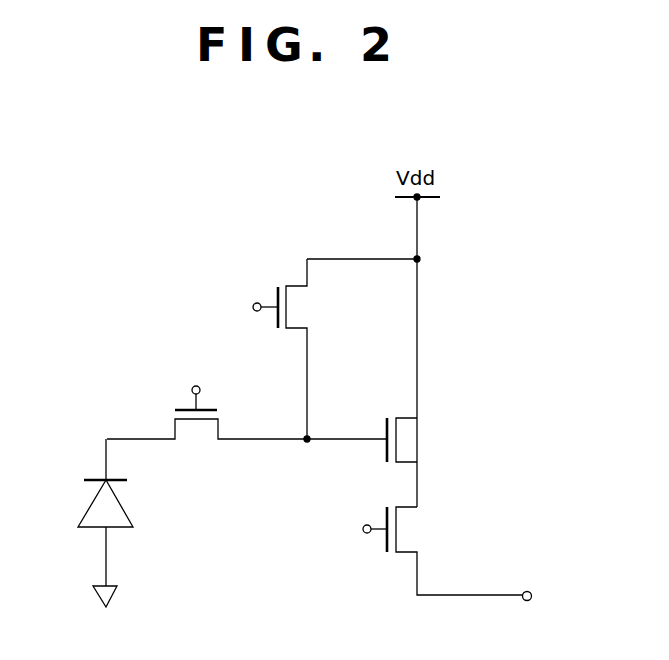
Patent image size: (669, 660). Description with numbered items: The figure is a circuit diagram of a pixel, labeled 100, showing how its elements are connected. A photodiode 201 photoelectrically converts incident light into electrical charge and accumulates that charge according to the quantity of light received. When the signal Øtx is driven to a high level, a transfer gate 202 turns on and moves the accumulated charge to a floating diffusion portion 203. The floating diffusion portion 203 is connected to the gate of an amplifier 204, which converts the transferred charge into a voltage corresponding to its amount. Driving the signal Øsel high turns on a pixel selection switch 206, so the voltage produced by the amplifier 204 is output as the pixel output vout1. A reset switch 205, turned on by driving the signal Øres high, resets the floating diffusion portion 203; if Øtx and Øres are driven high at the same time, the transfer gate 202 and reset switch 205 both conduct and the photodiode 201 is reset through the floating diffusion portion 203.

The pixel 100 is at (101, 155).
The photodiode 201 is at (92, 502).
The transfer gate 202 is at (168, 413).
The floating diffusion portion 203 is at (307, 443).
The amplifier 204 is at (415, 438).
The reset switch 205 is at (283, 280).
The pixel selection switch 206 is at (415, 528).